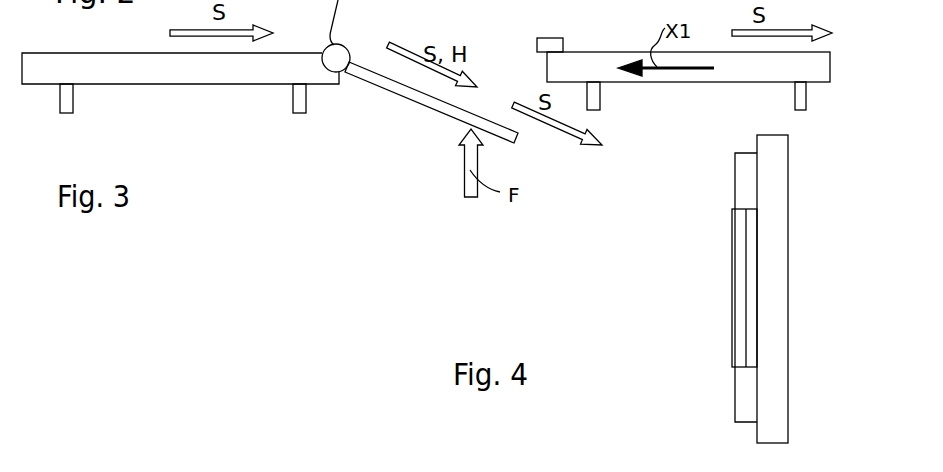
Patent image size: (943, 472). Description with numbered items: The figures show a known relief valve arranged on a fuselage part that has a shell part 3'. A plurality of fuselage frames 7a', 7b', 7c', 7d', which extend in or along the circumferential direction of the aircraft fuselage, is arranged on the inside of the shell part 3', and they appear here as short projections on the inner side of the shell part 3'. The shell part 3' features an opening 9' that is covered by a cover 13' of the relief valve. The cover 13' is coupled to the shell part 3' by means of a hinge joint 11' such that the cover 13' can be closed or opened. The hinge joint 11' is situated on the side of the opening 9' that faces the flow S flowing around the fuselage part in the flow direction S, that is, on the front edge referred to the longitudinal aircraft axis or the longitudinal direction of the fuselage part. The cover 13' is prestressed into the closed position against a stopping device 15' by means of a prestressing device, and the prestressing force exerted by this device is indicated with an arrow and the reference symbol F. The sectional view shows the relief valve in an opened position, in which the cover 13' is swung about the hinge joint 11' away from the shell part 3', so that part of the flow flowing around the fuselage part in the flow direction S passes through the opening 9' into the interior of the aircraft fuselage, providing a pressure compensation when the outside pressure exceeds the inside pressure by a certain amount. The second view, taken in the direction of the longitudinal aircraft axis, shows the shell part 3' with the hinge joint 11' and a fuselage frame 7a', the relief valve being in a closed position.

In FIG. 3, the shell part 3' is at (426, 99).
In FIG. 4, the shell part 3' is at (709, 287).
In FIG. 3, the fuselage frame 7a' is at (99, 105).
In FIG. 4, the fuselage frame 7a' is at (807, 289).
In FIG. 3, the fuselage frame 7b' is at (314, 130).
In FIG. 3, the fuselage frame 7c' is at (626, 102).
In FIG. 3, the fuselage frame 7d' is at (829, 103).
In FIG. 3, the opening 9' is at (572, 174).
In FIG. 4, the hinge joint 11' is at (711, 288).
In FIG. 3, the cover 13' is at (431, 112).
In FIG. 3, the stopping device 15' is at (583, 31).